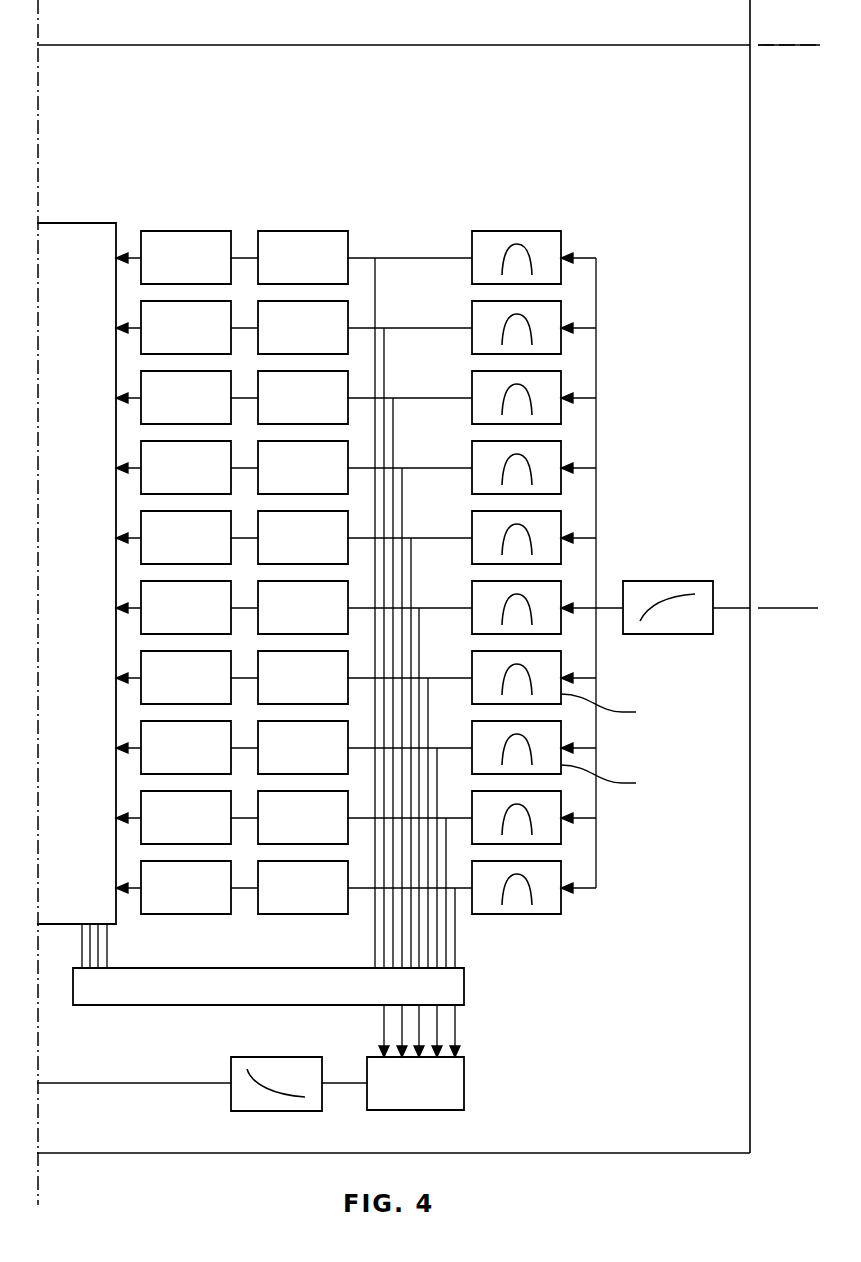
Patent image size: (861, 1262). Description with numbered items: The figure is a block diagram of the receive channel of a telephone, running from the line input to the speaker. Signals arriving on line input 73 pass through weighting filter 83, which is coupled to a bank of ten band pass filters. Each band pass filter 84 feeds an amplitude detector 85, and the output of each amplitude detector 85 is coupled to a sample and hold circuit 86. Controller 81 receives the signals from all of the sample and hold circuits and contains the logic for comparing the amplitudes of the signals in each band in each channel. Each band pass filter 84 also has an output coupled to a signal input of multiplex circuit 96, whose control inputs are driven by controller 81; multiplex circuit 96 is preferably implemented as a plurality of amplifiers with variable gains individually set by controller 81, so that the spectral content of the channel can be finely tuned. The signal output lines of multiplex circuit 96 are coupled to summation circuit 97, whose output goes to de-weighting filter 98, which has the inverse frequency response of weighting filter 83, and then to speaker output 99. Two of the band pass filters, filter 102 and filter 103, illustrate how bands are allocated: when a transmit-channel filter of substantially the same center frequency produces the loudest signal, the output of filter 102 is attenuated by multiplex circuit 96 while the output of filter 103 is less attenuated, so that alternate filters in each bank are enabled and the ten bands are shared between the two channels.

The line input 73 is at (800, 608).
The controller 81 is at (88, 223).
The weighting filter 83 is at (678, 581).
The band pass filter 84 is at (517, 231).
The amplitude detector 85 is at (312, 231).
The sample and hold circuit 86 is at (195, 231).
The multiplex circuit 96 is at (134, 1005).
The summation circuit 97 is at (464, 1083).
The de-weighting filter 98 is at (258, 1111).
The speaker output 99 is at (134, 1083).
The filter 102 is at (617, 708).
The filter 103 is at (617, 779).